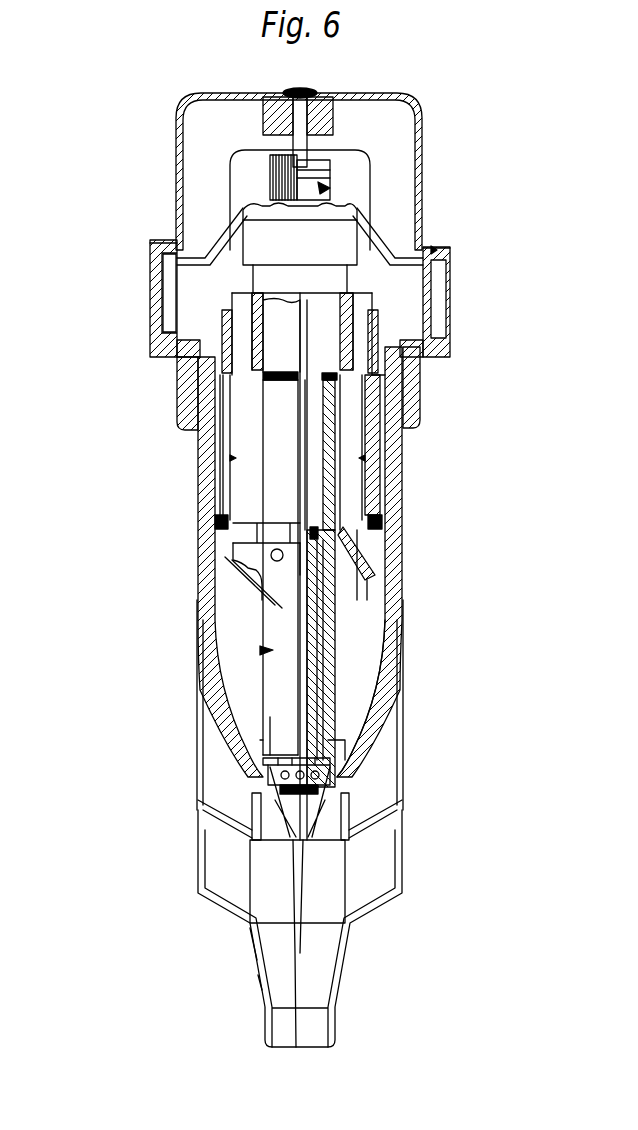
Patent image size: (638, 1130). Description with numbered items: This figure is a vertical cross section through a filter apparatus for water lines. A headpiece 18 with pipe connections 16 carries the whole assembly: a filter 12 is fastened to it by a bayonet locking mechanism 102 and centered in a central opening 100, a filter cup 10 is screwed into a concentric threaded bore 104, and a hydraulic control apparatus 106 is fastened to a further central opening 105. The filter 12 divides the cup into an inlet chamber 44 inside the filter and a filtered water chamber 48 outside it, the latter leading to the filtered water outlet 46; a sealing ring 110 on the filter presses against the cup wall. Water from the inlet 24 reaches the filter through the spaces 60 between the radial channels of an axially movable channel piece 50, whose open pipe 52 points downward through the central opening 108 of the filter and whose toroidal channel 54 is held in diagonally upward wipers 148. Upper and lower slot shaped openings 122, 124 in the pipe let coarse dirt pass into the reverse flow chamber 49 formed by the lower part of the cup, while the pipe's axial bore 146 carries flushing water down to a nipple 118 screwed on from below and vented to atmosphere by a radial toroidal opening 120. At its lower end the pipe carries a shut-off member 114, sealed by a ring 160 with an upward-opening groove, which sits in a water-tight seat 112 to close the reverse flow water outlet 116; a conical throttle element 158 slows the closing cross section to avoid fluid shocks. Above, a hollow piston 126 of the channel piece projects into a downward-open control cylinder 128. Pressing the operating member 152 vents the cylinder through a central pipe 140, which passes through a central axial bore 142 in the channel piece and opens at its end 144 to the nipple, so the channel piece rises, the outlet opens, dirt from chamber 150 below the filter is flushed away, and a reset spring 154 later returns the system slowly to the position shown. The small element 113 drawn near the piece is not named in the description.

The filter cup 10 is at (392, 497).
The filter 12 is at (372, 472).
The pipe connections 16 is at (152, 243).
The headpiece 18 is at (437, 245).
The inlet 24 is at (410, 345).
The inlet chamber 44 is at (302, 303).
The filtered water outlet 46 is at (164, 333).
The filtered water chamber 48 is at (213, 387).
The reverse flow chamber 49 is at (352, 657).
The channel piece 50 is at (265, 660).
The pipe 52 is at (270, 690).
The toroidal channel 54 is at (225, 516).
The spaces between the radial channels 60 is at (240, 560).
The central opening 100 is at (235, 310).
The bayonet locking mechanism 102 is at (222, 330).
The threaded bore 104 is at (392, 405).
The central opening 105 is at (312, 212).
The control apparatus 106 is at (330, 188).
The central opening 108 is at (255, 650).
The sealing ring 110 is at (233, 532).
The water-tight seat 112 is at (265, 760).
The piston bottom 113 is at (280, 700).
The shut-off member 114 is at (220, 803).
The reverse flow water outlet 116 is at (290, 840).
The nipple 118 is at (257, 970).
The radial toroidal opening 120 is at (380, 888).
The upper slot shaped openings 122 is at (337, 627).
The lower slot shaped openings 124 is at (333, 740).
The hollow piston 126 is at (332, 438).
The control cylinder 128 is at (245, 398).
The central pipe 140 is at (355, 325).
The central axial bore 142 is at (365, 575).
The end of central pipe 144 is at (345, 875).
The axial bore 146 is at (330, 768).
The wipers 148 is at (380, 520).
The chamber 150 is at (262, 590).
The operating member 152 is at (422, 130).
The reset spring 154 is at (327, 140).
The conical throttle element 158 is at (330, 822).
The ring 160 is at (348, 793).